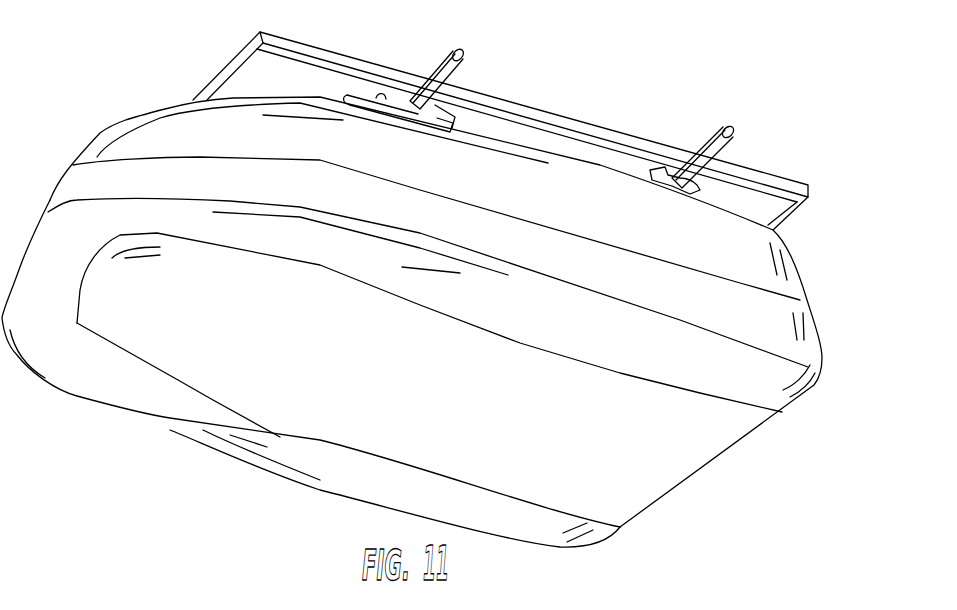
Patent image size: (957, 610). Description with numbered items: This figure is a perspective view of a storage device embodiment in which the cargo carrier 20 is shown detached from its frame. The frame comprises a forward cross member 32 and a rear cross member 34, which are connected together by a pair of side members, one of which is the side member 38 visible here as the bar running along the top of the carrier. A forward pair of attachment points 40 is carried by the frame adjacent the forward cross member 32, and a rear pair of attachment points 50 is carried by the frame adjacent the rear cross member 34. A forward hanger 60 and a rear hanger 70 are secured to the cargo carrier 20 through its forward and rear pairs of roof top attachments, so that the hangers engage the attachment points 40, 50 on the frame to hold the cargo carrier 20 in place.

The cargo carrier 20 is at (820, 380).
The forward cross member 32 is at (213, 78).
The rear cross member 34 is at (810, 212).
The side member 38 is at (535, 105).
The forward pair of attachment points 40 is at (667, 177).
The rear pair of attachment points 50 is at (367, 97).
The forward hanger 60 is at (482, 43).
The rear hanger 70 is at (700, 148).